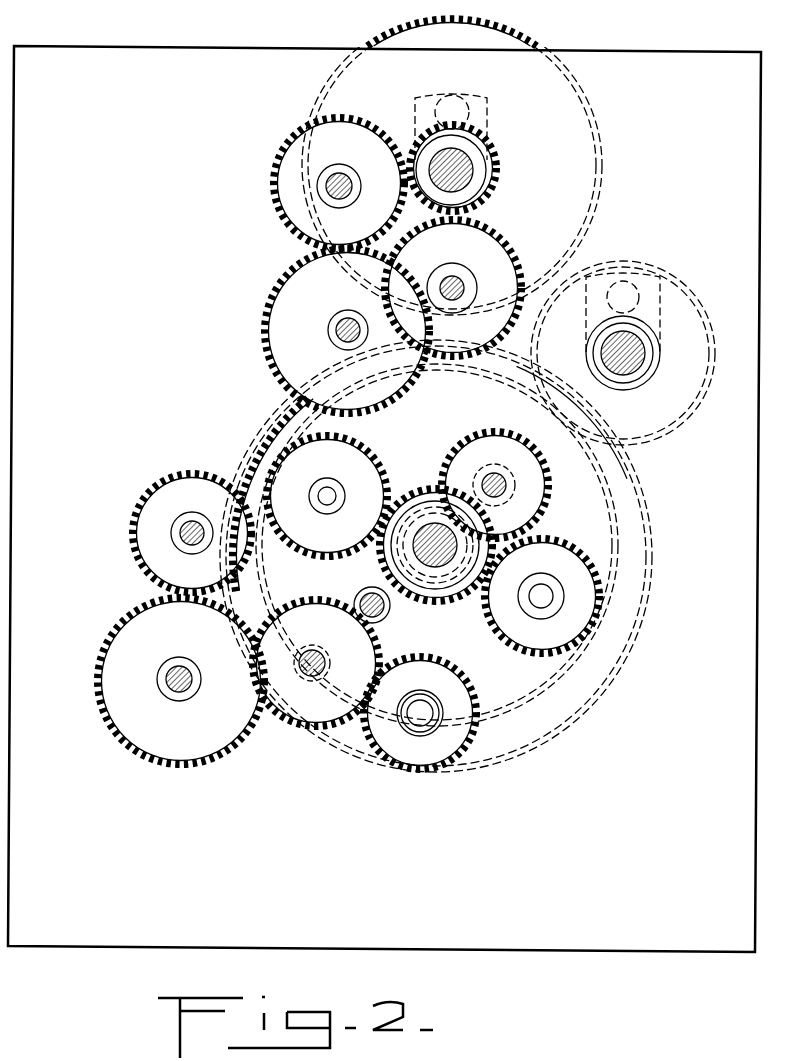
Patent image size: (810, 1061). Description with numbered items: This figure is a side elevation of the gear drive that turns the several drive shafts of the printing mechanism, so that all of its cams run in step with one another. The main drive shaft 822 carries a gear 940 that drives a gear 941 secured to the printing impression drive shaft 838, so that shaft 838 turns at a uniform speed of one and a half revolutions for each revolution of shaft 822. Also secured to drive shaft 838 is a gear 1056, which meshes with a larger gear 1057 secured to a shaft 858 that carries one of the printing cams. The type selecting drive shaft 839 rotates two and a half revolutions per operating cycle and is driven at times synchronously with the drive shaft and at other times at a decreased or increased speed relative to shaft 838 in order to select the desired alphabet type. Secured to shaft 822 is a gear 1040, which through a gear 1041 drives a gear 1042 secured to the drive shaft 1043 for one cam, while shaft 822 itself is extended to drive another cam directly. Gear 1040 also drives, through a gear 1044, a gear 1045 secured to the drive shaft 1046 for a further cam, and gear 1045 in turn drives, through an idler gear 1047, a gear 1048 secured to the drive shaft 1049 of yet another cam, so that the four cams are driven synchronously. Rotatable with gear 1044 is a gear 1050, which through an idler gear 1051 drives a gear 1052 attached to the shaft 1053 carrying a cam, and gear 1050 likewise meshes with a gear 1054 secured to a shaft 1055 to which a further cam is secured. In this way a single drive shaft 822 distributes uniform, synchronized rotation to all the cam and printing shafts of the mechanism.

The gear 941 is at (592, 123).
The printing impression drive shaft 838 is at (461, 167).
The gear 1056 is at (490, 197).
The gear 1057 is at (497, 263).
The shaft 858 is at (481, 251).
The gear 1054 is at (290, 288).
The shaft 1055 is at (342, 341).
The gear 940 is at (562, 728).
The gear 1050 is at (292, 442).
The gear 1044 is at (300, 470).
The idler gear 1051 is at (163, 500).
The gear 1052 is at (143, 622).
The shaft 1053 is at (188, 697).
The drive shaft 822 is at (422, 527).
The gear 1040 is at (413, 617).
The gear 1045 is at (424, 625).
The drive shaft 1046 is at (374, 619).
The gear 1048 is at (330, 710).
The drive shaft 1049 is at (307, 670).
The idler gear 1047 is at (428, 752).
The gear 1041 is at (598, 524).
The gear 1042 is at (522, 412).
The drive shaft 1043 is at (499, 480).
The type selecting drive shaft 839 is at (630, 372).